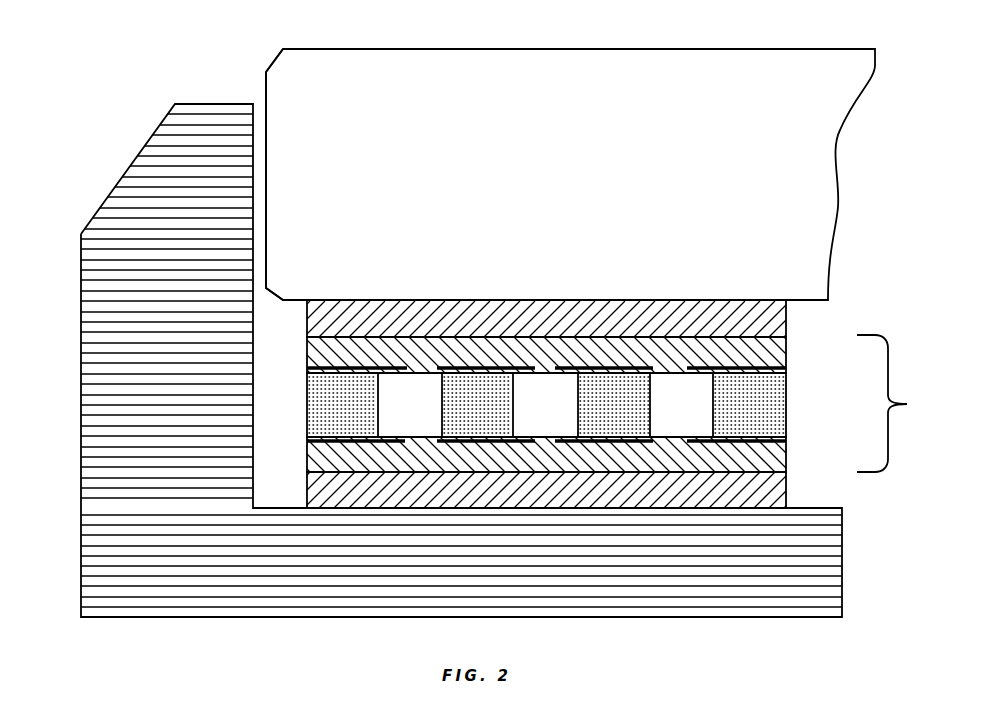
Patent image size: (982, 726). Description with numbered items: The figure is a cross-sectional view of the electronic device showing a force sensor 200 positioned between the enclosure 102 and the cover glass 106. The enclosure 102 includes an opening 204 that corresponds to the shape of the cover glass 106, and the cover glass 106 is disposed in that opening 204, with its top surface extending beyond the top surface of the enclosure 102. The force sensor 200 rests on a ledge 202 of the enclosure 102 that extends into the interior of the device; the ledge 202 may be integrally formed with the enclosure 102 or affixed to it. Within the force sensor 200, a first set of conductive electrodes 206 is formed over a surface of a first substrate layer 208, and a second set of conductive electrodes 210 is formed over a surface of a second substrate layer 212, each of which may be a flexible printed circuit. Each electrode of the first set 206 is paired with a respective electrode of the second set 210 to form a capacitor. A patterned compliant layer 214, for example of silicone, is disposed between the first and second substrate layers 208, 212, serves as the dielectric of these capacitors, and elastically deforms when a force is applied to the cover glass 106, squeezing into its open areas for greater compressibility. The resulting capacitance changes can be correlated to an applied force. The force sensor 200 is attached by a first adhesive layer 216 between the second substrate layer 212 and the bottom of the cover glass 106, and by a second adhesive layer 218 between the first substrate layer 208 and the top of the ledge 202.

The enclosure 102 is at (125, 175).
The cover glass 106 is at (586, 48).
The force sensor 200 is at (899, 403).
The ledge 202 is at (279, 508).
The opening 204 is at (253, 100).
The first set of conductive electrodes 206 is at (791, 442).
The first substrate layer 208 is at (787, 465).
The second set of conductive electrodes 210 is at (791, 368).
The second substrate layer 212 is at (787, 352).
The patterned compliant layer 214 is at (791, 405).
The first adhesive layer 216 is at (787, 320).
The second adhesive layer 218 is at (787, 494).